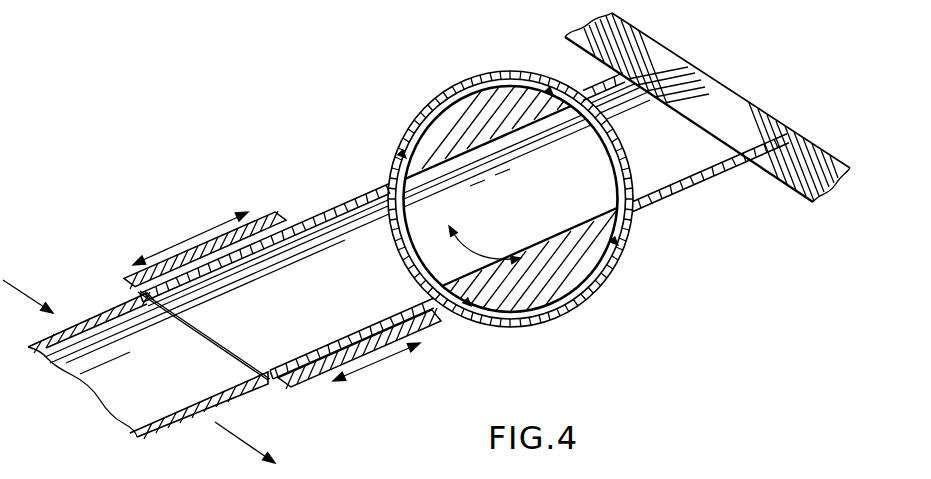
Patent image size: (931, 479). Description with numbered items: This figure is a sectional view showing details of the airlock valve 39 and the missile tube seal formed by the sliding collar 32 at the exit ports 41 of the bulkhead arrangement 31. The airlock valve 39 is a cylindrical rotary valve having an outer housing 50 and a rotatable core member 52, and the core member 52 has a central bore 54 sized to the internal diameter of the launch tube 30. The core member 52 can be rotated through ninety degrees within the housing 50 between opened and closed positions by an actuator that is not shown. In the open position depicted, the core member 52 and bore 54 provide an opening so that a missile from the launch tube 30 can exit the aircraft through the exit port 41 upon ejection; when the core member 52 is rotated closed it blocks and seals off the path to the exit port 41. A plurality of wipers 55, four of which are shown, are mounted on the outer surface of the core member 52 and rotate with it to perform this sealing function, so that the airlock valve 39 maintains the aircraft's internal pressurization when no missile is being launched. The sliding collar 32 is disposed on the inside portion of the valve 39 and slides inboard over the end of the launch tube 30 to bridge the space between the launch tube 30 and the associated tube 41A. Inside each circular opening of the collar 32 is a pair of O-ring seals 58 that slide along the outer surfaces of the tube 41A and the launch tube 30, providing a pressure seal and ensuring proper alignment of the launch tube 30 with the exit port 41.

The launch tube 30 is at (90, 320).
The bulkhead arrangement 31 is at (808, 143).
The sliding collar 32 is at (205, 245).
The airlock valve 39 is at (461, 65).
The exit port 41 is at (742, 97).
The tube 41A is at (343, 200).
The outer housing 50 is at (524, 327).
The core member 52 is at (568, 262).
The central bore 54 is at (587, 187).
The wipers 55 is at (403, 152).
The O-ring seals 58 is at (426, 323).